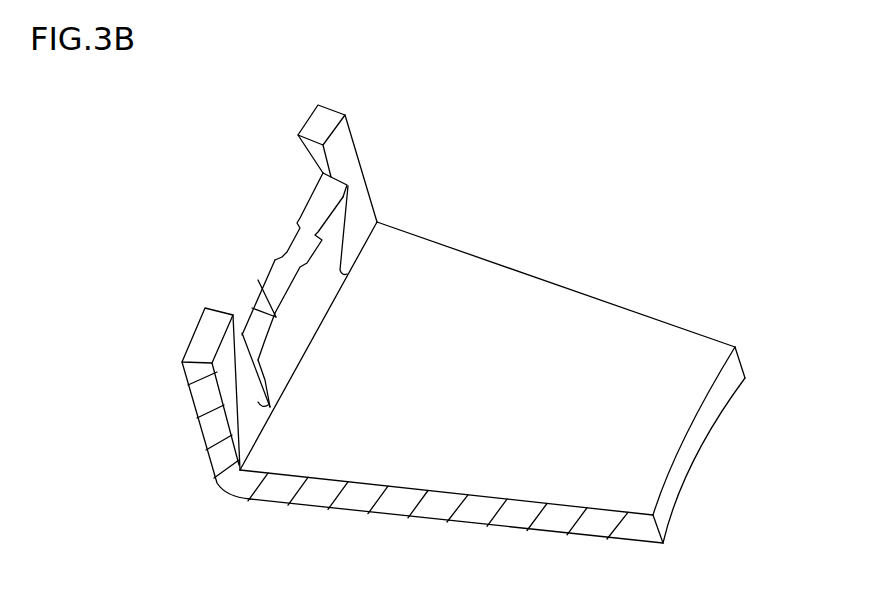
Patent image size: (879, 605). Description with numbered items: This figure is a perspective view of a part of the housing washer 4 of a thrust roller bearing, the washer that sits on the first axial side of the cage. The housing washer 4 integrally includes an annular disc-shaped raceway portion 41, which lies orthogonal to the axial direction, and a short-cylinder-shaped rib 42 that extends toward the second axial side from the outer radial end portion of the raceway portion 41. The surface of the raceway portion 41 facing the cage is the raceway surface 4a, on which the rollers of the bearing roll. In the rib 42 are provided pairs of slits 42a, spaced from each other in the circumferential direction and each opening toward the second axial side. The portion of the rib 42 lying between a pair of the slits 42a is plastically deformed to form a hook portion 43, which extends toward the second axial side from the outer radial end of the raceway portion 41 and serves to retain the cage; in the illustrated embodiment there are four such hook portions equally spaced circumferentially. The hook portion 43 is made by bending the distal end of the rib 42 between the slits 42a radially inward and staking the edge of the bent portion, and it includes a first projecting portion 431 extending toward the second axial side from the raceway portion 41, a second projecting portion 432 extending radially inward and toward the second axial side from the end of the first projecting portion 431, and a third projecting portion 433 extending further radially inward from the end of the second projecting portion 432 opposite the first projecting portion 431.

The housing washer 4 is at (666, 197).
The raceway surface 4a is at (707, 347).
The raceway portion 41 is at (677, 327).
The rib 42 is at (313, 125).
The slits 42a is at (341, 237).
The hook portion 43 is at (212, 167).
The first projecting portion 431 is at (242, 333).
The second projecting portion 432 is at (258, 280).
The third projecting portion 433 is at (297, 250).